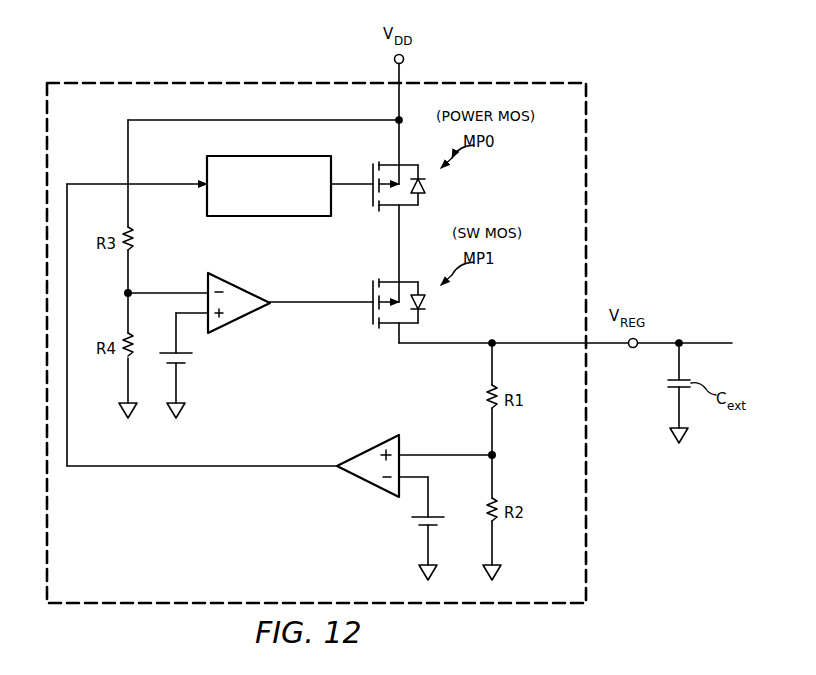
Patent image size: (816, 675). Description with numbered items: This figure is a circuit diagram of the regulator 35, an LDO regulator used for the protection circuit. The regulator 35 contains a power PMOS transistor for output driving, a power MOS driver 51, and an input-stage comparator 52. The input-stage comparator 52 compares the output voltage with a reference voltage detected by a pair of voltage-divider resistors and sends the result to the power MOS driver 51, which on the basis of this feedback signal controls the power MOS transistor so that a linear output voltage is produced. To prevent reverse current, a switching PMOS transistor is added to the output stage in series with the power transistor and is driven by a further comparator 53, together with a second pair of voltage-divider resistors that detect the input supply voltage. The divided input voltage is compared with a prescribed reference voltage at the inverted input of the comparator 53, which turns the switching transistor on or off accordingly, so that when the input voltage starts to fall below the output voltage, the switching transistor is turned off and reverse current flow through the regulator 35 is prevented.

The regulator 35 is at (205, 568).
The power MOS driver 51 is at (303, 216).
The input-stage comparator 52 is at (366, 483).
The comparator 53 is at (238, 322).